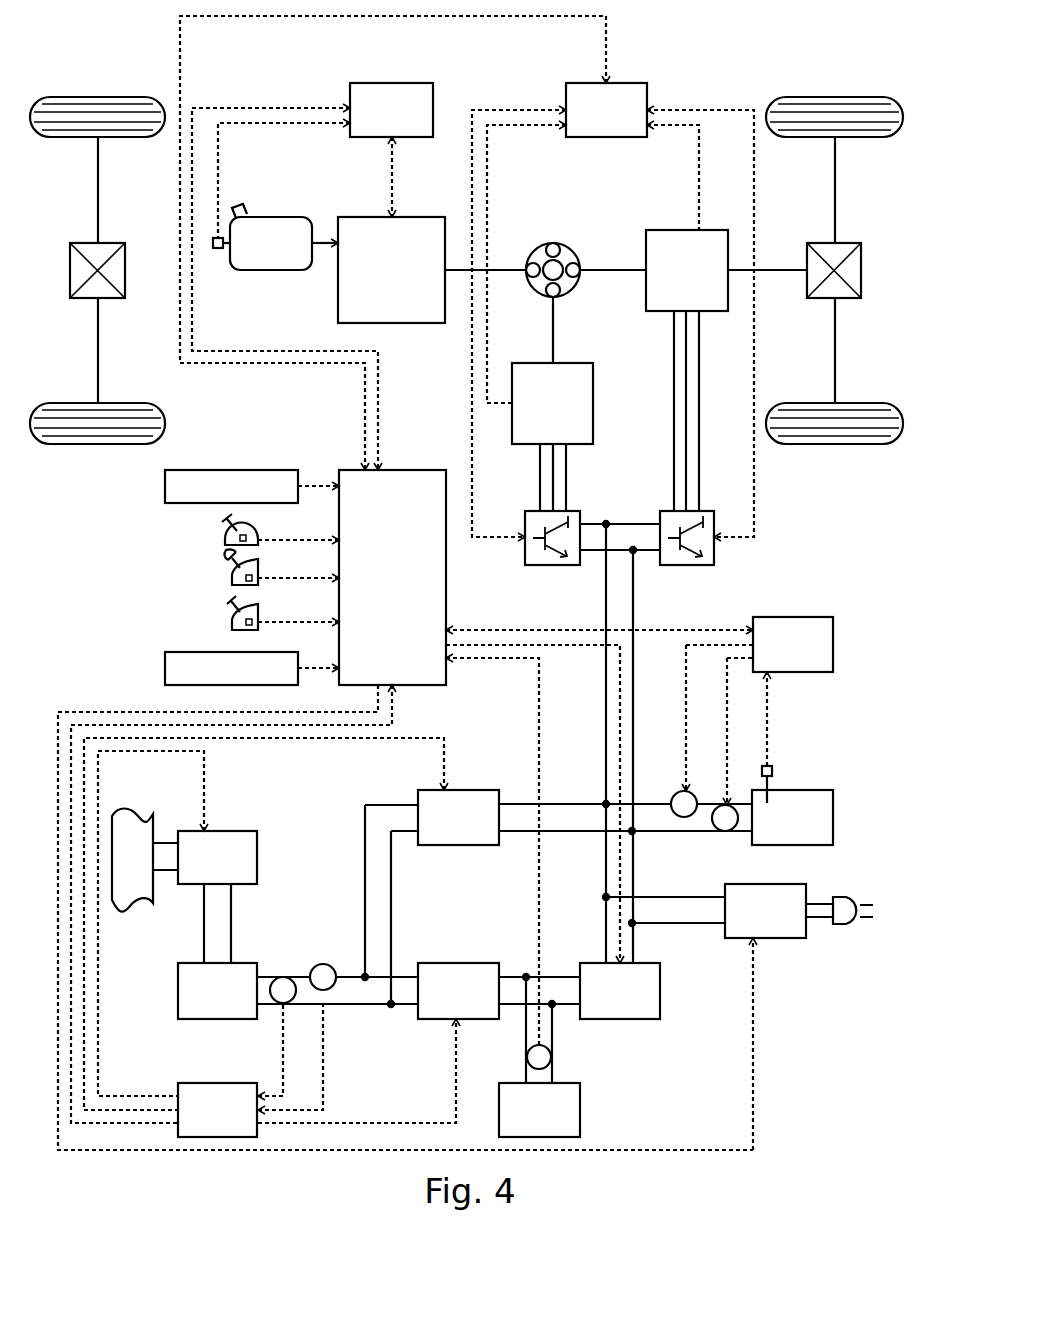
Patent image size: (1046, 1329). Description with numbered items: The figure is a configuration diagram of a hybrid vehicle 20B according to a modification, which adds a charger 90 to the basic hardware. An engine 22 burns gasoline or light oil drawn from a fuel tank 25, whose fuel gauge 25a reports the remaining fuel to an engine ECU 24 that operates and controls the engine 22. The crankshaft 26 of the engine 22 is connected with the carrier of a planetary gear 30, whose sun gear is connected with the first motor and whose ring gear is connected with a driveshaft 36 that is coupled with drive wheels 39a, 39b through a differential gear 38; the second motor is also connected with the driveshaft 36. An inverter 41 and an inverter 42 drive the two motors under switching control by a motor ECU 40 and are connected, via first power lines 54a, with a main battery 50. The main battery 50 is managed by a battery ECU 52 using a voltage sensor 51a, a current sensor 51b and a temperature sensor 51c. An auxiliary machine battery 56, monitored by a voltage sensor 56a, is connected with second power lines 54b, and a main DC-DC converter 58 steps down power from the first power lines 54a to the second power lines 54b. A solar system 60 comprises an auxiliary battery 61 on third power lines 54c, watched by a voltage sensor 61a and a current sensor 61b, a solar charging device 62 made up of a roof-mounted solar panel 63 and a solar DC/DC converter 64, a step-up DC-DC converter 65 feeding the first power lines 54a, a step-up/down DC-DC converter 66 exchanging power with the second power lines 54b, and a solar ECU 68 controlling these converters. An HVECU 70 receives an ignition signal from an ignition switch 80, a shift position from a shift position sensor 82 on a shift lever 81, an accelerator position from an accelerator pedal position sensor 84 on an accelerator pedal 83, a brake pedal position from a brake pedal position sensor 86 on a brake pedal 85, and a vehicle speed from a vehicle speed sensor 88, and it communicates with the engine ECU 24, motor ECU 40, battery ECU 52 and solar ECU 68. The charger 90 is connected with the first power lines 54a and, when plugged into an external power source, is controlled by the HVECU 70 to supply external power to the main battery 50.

The hybrid vehicle 20B is at (740, 55).
The engine 22 is at (415, 217).
The engine ECU 24 is at (405, 83).
The fuel tank 25 is at (283, 217).
The fuel gauge 25a is at (218, 249).
The crankshaft 26 is at (498, 268).
The planetary gear 30 is at (553, 243).
The driveshaft 36 is at (780, 268).
The differential gear 38 is at (852, 243).
The drive wheel 39a is at (835, 97).
The drive wheel 39b is at (835, 444).
The motor ECU 40 is at (622, 83).
The inverter 41 is at (577, 511).
The inverter 42 is at (711, 511).
The main battery 50 is at (805, 790).
The voltage sensor 51a is at (727, 832).
The current sensor 51b is at (680, 817).
The temperature sensor 51c is at (770, 765).
The battery ECU 52 is at (803, 617).
The first power lines 54a is at (635, 597).
The second power lines 54b is at (566, 1003).
The third power lines 54c is at (391, 862).
The auxiliary machine battery 56 is at (580, 1110).
The voltage sensor 56a is at (552, 1057).
The main DC-DC converter 58 is at (661, 990).
The solar system 60 is at (500, 735).
The auxiliary battery 61 is at (178, 988).
The voltage sensor 61a is at (283, 977).
The current sensor 61b is at (323, 964).
The solar charging device 62 is at (258, 803).
The solar panel 63 is at (130, 812).
The solar DC/DC converter 64 is at (222, 831).
The step-up DC-DC converter 65 is at (462, 790).
The step-up/down DC-DC converter 66 is at (462, 963).
The solar ECU 68 is at (222, 1083).
The HVECU 70 is at (428, 470).
The ignition switch 80 is at (165, 484).
The shift lever 81 is at (228, 530).
The shift position sensor 82 is at (240, 540).
The accelerator pedal 83 is at (232, 566).
The accelerator pedal position sensor 84 is at (240, 580).
The brake pedal 85 is at (232, 610).
The brake pedal position sensor 86 is at (240, 624).
The vehicle speed sensor 88 is at (165, 666).
The charger 90 is at (780, 940).